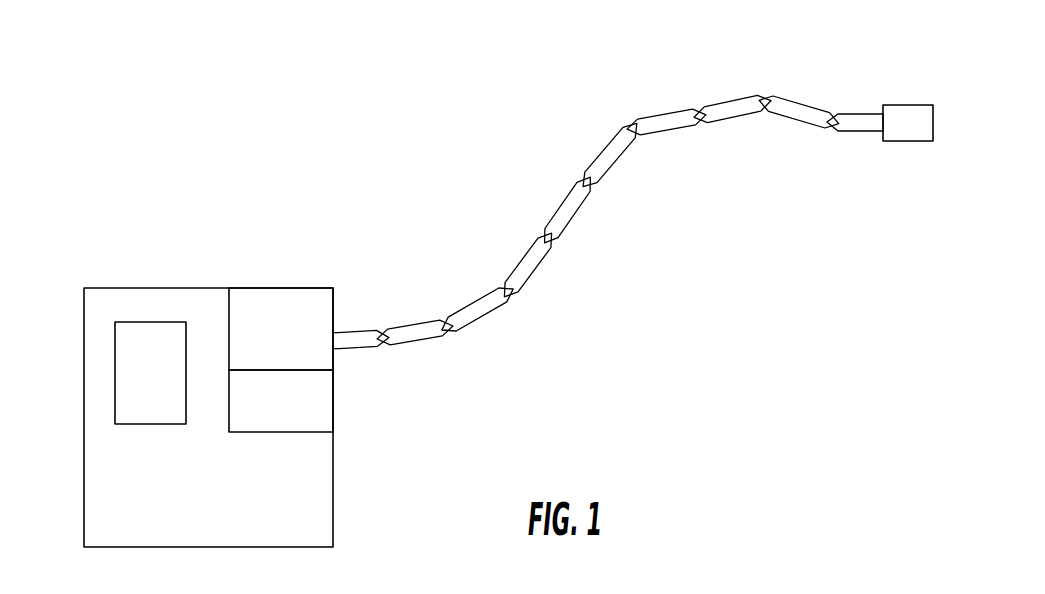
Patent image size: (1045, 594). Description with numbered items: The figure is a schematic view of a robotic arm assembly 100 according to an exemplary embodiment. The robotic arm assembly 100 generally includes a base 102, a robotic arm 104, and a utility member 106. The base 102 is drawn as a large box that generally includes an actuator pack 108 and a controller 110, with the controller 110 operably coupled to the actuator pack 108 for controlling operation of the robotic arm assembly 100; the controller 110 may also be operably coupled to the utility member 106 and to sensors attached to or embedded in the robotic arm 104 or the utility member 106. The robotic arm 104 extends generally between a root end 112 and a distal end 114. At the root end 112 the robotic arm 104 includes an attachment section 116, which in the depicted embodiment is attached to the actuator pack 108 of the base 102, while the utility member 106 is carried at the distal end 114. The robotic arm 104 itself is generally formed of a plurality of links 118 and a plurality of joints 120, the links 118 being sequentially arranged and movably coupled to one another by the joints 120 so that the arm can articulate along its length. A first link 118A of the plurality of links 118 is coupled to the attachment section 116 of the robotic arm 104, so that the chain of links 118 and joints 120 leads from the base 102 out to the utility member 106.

The robotic arm assembly 100 is at (352, 85).
The base 102 is at (170, 288).
The robotic arm 104 is at (635, 292).
The utility member 106 is at (912, 132).
The actuator pack 108 is at (277, 413).
The controller 110 is at (143, 392).
The root end 112 is at (383, 383).
The distal end 114 is at (846, 178).
The attachment section 116 is at (284, 303).
The links 118 is at (527, 282).
The first link 118A is at (347, 337).
The joints 120 is at (513, 310).